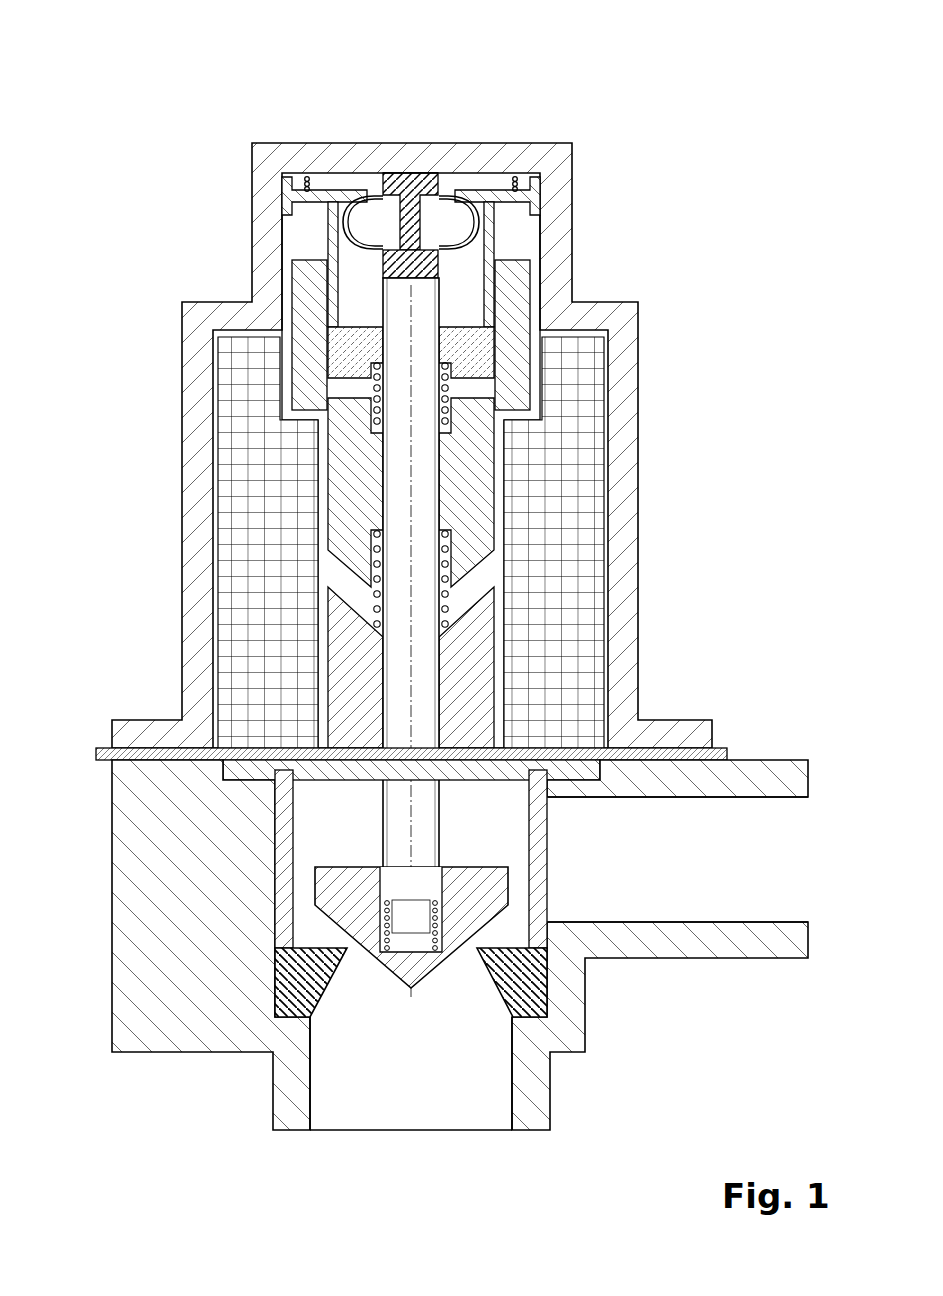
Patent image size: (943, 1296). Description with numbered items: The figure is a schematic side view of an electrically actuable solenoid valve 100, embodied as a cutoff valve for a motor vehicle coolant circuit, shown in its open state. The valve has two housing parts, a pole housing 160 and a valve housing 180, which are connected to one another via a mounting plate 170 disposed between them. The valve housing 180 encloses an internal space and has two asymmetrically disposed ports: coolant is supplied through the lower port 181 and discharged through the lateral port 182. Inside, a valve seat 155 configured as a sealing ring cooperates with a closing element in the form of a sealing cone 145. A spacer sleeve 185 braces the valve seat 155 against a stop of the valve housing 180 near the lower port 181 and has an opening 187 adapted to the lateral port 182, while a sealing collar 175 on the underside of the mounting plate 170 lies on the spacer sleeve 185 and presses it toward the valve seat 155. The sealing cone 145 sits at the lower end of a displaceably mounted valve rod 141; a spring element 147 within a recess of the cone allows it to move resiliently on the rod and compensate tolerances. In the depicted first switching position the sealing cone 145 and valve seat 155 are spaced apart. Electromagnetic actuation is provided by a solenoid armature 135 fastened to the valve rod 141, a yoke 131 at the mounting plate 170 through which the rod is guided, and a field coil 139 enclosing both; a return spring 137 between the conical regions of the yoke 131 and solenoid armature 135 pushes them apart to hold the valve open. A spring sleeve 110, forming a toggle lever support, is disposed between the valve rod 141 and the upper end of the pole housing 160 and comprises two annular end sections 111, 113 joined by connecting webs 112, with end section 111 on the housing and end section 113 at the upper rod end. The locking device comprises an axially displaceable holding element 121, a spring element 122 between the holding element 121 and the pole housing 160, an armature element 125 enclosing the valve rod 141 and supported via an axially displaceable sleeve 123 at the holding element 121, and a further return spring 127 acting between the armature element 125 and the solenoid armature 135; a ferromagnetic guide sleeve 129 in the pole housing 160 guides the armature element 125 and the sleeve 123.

The solenoid valve 100 is at (100, 78).
The spring sleeve 110 is at (367, 203).
The end section 111 is at (385, 185).
The connecting webs 112 is at (413, 223).
The end section 113 is at (383, 263).
The holding element 121 is at (477, 193).
The spring element 122 is at (513, 187).
The sleeve 123 is at (497, 225).
The armature element 125 is at (475, 355).
The further return spring 127 is at (450, 400).
The guide sleeve 129 is at (305, 290).
The yoke 131 is at (470, 680).
The solenoid armature 135 is at (470, 500).
The return spring 137 is at (445, 608).
The field coil 139 is at (570, 458).
The valve rod 141 is at (400, 472).
The sealing cone 145 is at (405, 972).
The spring element 147 is at (430, 928).
The valve seat 155 is at (525, 990).
The pole housing 160 is at (205, 552).
The mounting plate 170 is at (100, 750).
The sealing collar 175 is at (485, 778).
The valve housing 180 is at (135, 892).
The lower port 181 is at (405, 1108).
The lateral port 182 is at (775, 880).
The spacer sleeve 185 is at (285, 820).
The opening 187 is at (540, 848).